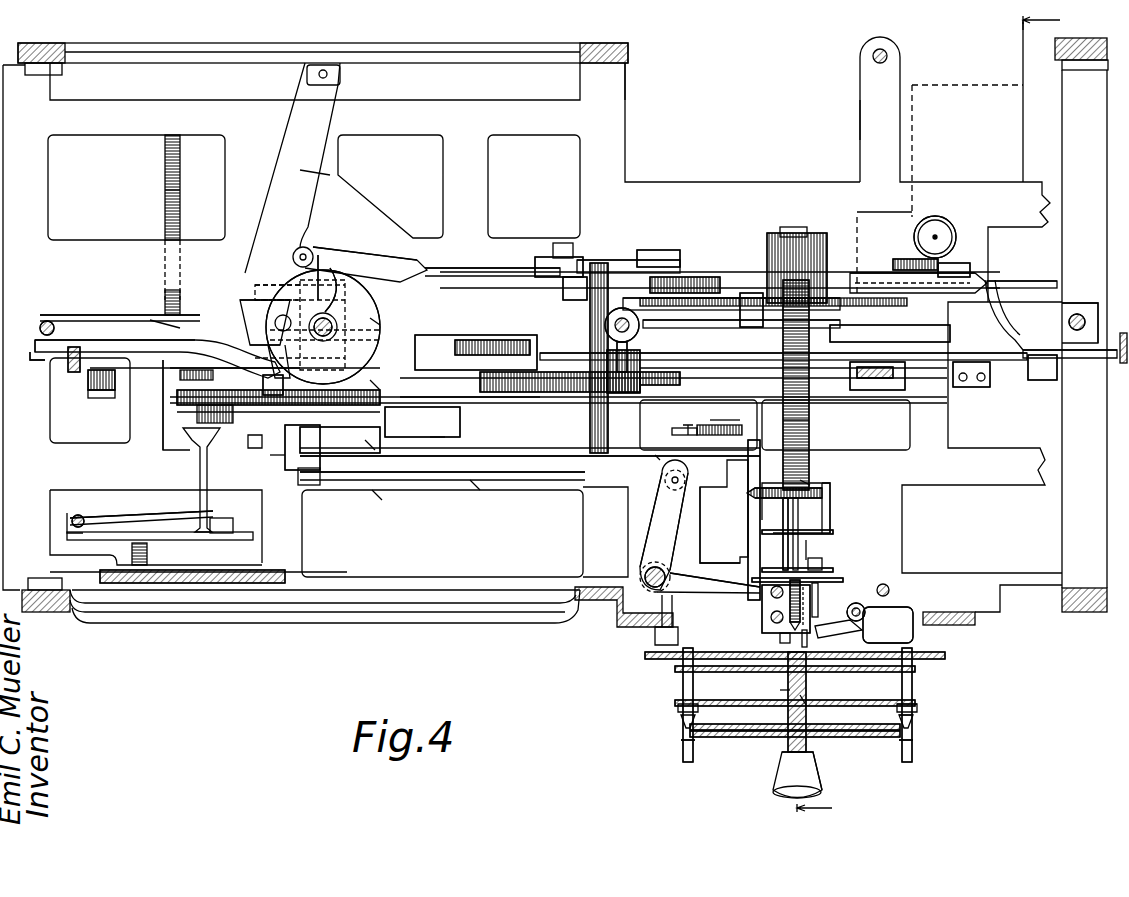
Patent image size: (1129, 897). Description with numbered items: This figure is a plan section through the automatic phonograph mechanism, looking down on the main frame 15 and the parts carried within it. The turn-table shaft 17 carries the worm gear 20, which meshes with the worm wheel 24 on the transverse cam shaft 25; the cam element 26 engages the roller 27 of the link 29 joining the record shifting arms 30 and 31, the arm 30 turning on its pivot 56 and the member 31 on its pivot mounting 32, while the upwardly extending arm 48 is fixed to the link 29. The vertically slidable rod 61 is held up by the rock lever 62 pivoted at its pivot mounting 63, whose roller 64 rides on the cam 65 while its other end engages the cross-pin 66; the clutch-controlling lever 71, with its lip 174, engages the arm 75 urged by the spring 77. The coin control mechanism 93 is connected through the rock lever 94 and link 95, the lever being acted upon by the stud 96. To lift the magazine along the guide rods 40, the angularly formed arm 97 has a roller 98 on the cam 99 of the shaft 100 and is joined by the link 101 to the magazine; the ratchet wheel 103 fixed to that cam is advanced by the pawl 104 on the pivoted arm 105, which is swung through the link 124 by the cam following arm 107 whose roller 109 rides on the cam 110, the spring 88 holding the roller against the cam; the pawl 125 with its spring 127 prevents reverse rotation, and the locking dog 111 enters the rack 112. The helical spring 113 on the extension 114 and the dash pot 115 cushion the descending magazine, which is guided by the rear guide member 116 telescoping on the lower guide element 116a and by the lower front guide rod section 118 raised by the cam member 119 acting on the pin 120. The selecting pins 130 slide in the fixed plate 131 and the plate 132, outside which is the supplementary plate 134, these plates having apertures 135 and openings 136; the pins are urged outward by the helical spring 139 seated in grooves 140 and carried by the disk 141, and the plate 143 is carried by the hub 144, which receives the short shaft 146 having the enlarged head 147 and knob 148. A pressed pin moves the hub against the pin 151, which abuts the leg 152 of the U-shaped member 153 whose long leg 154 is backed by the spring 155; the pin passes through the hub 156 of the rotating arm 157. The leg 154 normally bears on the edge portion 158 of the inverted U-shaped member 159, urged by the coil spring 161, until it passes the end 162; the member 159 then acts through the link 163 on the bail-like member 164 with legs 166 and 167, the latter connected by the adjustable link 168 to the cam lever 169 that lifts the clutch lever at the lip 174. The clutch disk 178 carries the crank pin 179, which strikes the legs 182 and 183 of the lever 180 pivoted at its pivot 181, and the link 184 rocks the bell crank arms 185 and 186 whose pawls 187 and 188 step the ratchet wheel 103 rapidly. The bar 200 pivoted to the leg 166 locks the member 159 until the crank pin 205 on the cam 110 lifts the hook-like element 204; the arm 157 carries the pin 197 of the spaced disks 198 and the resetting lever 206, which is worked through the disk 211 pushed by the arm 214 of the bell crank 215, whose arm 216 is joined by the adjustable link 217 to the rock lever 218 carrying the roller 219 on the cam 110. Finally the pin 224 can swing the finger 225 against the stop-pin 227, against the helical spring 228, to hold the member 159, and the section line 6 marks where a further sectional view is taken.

The section line 6— 6 is at (959, 415).
The main frame structure 15 is at (625, 88).
The shaft 17 is at (333, 327).
The worm gear 20 is at (338, 325).
The worm wheel 24 is at (240, 300).
The cam shaft 25 is at (279, 457).
The cam element 26 is at (378, 384).
The roller 27 is at (170, 388).
The link 29 is at (840, 336).
The record shifting arm 30 is at (77, 374).
The record shifting arm 31 is at (1108, 356).
The pivot mounting 32 is at (1042, 382).
The guide rods 40 is at (888, 56).
The upwardly extending arm 48 is at (480, 394).
The pivot 56 is at (93, 392).
The rod 61 is at (41, 328).
The rock lever 62 is at (210, 352).
The pivot mounting 63 is at (160, 318).
The roller 64 is at (271, 403).
The cam 65 is at (243, 397).
The cross-pin 66 is at (40, 355).
The clutch-controlling lever 71 is at (86, 316).
The vertically disposed arm 75 is at (170, 300).
The spring means 77 is at (170, 200).
The spring 88 is at (681, 384).
The coin control mechanism 93 is at (183, 583).
The rock lever 94 is at (200, 503).
The link 95 is at (110, 519).
The pin or stud 96 is at (251, 447).
The angularly formed arm 97 is at (776, 320).
The roller 98 is at (746, 322).
The cam 99 is at (718, 310).
The shaft 100 is at (810, 440).
The link 101 is at (882, 330).
The ratchet wheel 103 is at (750, 275).
The pawl 104 is at (990, 275).
The pivoted arm 105 is at (1000, 292).
The cam following arm 107 is at (476, 486).
The roller 109 is at (390, 410).
The cam 110 is at (370, 452).
The locking dog 111 is at (972, 387).
The rack 112 is at (878, 390).
The helical spring 113 is at (460, 343).
The extension 114 is at (428, 333).
The dash pot 115 is at (938, 218).
The rear guide member 116 is at (1080, 314).
The lower guide element 116a is at (1069, 322).
The lower section of front guide rod 118 is at (622, 308).
The cam member 119 is at (606, 374).
The pin 120 is at (612, 385).
The link 124 is at (862, 425).
The pawl 125 is at (955, 262).
The spring 127 is at (907, 260).
The selecting pins 130 is at (684, 758).
The fixed plate 131 is at (706, 653).
The plate 132 is at (681, 730).
The supplementary plate 134 is at (808, 735).
The apertures 135 is at (712, 729).
The openings 136 is at (716, 738).
The helical spring 139 is at (918, 701).
The grooves 140 is at (913, 694).
The disk 141 is at (778, 702).
The plate 143 is at (846, 671).
The hub 144 is at (785, 690).
The short shaft 146 is at (807, 695).
The enlarged head 147 is at (788, 664).
The knob 148 is at (821, 772).
The pin 151 is at (800, 549).
The leg 152 is at (816, 531).
The U-shaped member 153 is at (832, 494).
The long leg 154 is at (806, 483).
The spring 155 is at (810, 421).
The hub 156 is at (766, 605).
The arm 157 is at (822, 616).
The edge portion 158 is at (761, 503).
The inverted U-shaped member 159 is at (735, 524).
The coil spring 161 is at (770, 498).
The end 162 is at (758, 479).
The link 163 is at (660, 457).
The bail-like member 164 is at (590, 440).
The leg 166 is at (572, 457).
The leg 167 is at (575, 298).
The adjustable link 168 is at (457, 268).
The cam lever 169 is at (265, 285).
The lip 174 is at (322, 290).
The flange or disk 178 is at (375, 322).
The crank pin 179 is at (258, 300).
The lever 180 is at (315, 172).
The pivot 181 is at (335, 73).
The leg 182 is at (374, 298).
The leg 183 is at (240, 320).
The link 184 is at (372, 264).
The arm 185 is at (551, 268).
The arm 186 is at (614, 268).
The pawl 187 is at (692, 277).
The pawl 188 is at (662, 270).
The pin 197 is at (832, 590).
The disks 198 is at (812, 546).
The bar 200 is at (502, 456).
The hook-like element 204 is at (306, 463).
The crank pin 205 is at (312, 438).
The lever 206 is at (906, 610).
The disk 211 is at (832, 574).
The arm 214 is at (726, 590).
The bell crank 215 is at (678, 570).
The arm 216 is at (652, 531).
The adjustable link 217 is at (516, 481).
The rock lever 218 is at (441, 439).
The roller 219 is at (378, 502).
The pin 224 is at (722, 418).
The finger 225 is at (673, 430).
The stop-pin 227 is at (690, 424).
The helical spring 228 is at (722, 426).